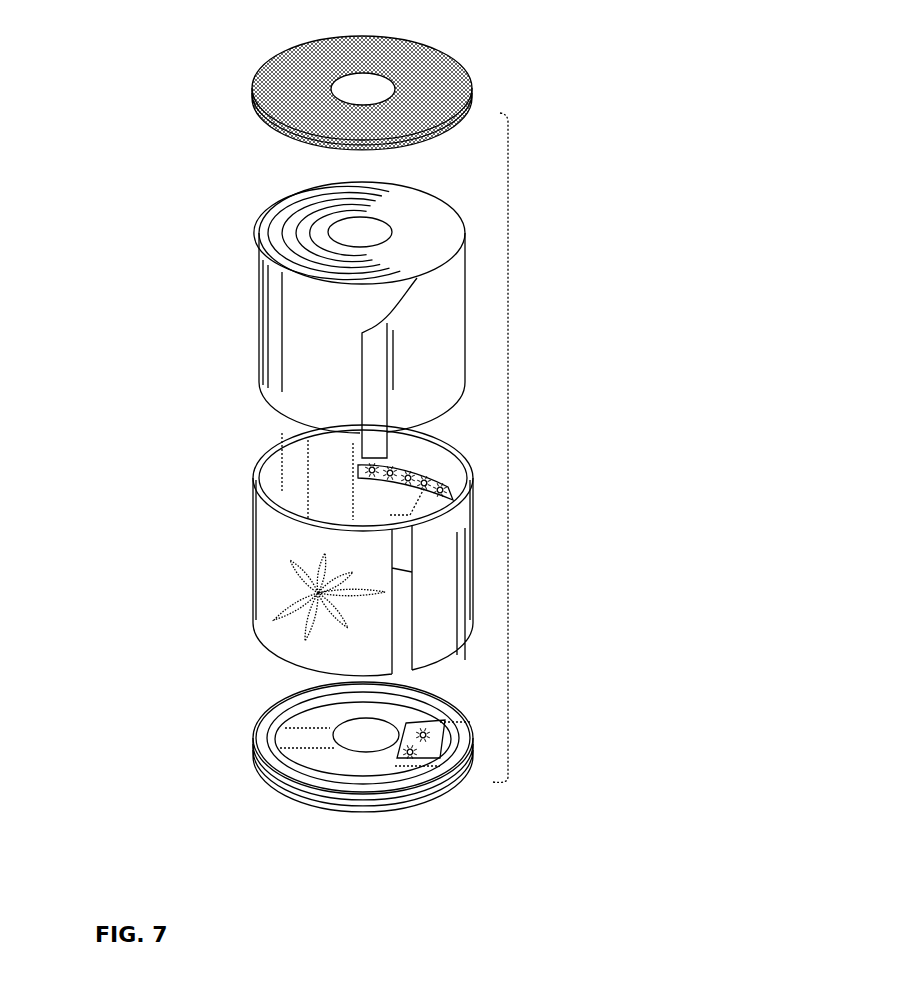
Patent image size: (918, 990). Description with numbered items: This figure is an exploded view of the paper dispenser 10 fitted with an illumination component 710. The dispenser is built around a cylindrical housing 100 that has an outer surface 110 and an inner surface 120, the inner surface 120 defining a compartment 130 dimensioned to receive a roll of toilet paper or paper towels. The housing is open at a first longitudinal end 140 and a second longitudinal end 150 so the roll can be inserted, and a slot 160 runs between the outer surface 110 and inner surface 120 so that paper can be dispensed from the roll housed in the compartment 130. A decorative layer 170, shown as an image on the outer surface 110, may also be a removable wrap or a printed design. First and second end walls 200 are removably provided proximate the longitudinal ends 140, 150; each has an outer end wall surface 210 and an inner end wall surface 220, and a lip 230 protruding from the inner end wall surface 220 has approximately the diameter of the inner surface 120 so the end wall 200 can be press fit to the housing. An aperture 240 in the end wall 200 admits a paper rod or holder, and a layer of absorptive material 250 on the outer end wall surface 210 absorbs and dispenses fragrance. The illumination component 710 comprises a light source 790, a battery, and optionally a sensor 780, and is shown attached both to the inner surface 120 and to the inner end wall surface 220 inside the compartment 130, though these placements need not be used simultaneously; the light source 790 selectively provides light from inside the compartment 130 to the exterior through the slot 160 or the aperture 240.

The paper dispenser 10 is at (508, 475).
The cylindrical housing 100 is at (177, 503).
The outer surface 110 is at (290, 548).
The inner surface 120 is at (350, 487).
The compartment 130 is at (343, 492).
The first longitudinal end 140 is at (292, 454).
The second longitudinal end 150 is at (268, 651).
The slot 160 is at (400, 505).
The decorative layer 170 is at (280, 622).
The end wall 200 is at (210, 106).
The outer end wall surface 210 is at (258, 130).
The inner end wall surface 220 is at (345, 752).
The lip 230 is at (470, 108).
The aperture 240 is at (363, 88).
The layer of absorptive material 250 is at (455, 65).
The illumination component 710 is at (438, 485).
The sensor 780 is at (412, 755).
The light source 790 is at (387, 456).